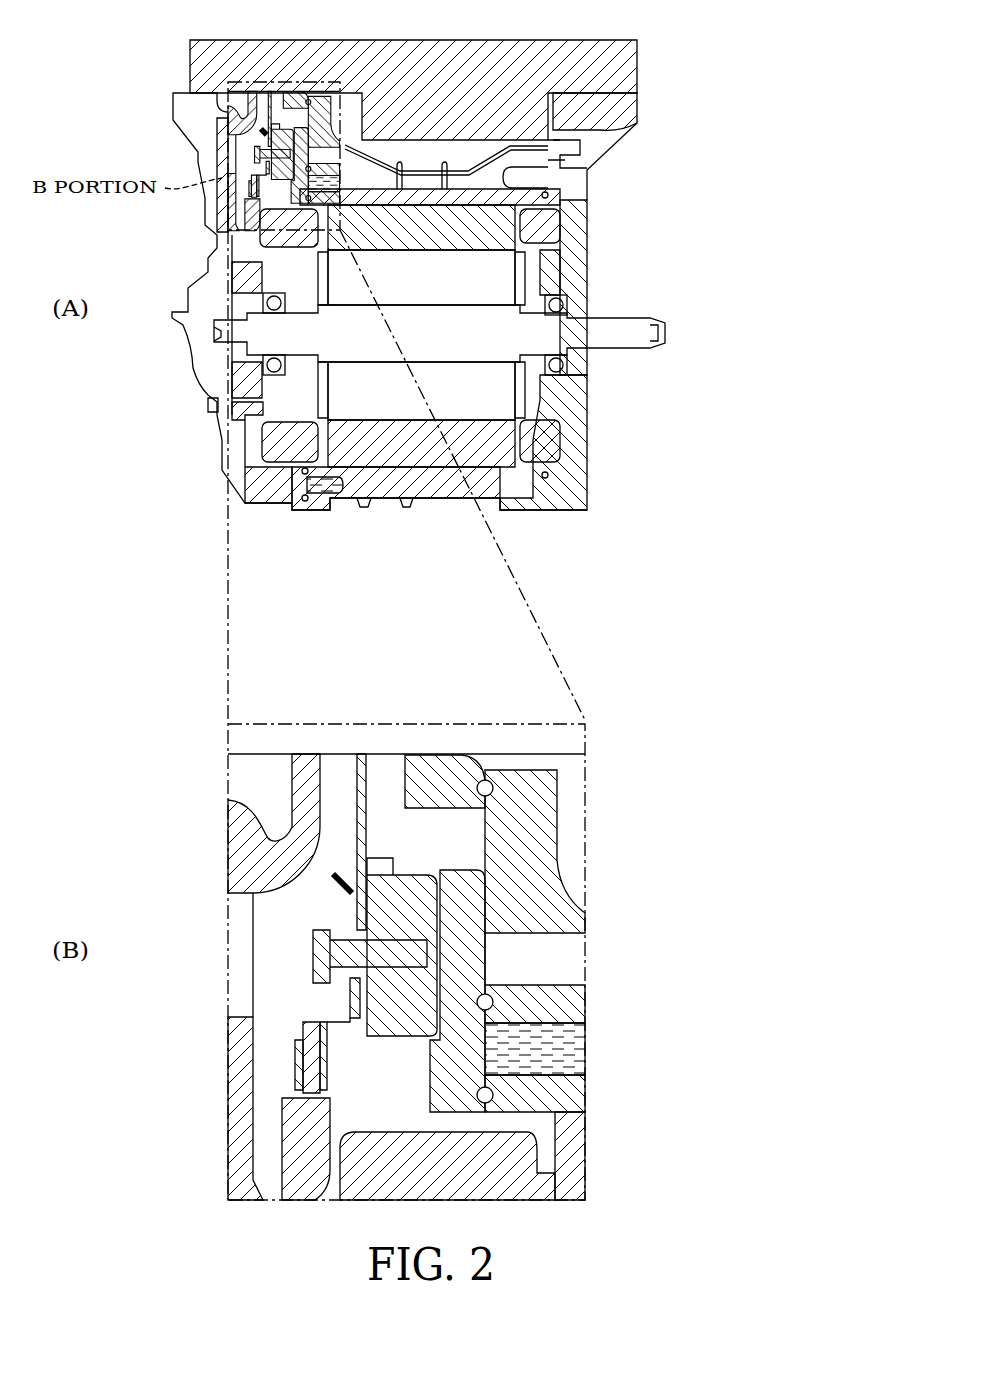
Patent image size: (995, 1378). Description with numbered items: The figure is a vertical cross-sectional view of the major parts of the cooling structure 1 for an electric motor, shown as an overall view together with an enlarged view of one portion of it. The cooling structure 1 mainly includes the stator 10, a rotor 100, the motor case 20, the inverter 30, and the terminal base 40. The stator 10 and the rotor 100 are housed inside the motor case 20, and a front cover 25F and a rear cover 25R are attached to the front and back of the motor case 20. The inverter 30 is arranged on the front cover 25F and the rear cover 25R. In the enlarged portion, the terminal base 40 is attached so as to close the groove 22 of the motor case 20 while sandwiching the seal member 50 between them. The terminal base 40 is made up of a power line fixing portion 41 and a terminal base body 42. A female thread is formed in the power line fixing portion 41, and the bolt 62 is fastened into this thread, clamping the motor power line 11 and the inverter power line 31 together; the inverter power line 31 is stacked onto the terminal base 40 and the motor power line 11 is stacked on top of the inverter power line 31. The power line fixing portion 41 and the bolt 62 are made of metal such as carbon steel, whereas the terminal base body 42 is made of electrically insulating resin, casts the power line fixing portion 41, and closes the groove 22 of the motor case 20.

The cooling structure 1 is at (756, 75).
The inverter 30 is at (628, 58).
The motor case 20 is at (460, 490).
The rear cover 25R is at (270, 503).
The front cover 25F is at (580, 508).
The stator 10 is at (373, 465).
The rotor 100 is at (412, 410).
The inverter power line 31 is at (355, 777).
The terminal base 40 is at (426, 883).
The power line fixing portion 41 is at (412, 882).
The terminal base body 42 is at (458, 870).
The bolt 62 is at (348, 918).
The motor power line 11 is at (348, 1002).
The seal member 50 is at (478, 1093).
The groove 22 is at (567, 1025).